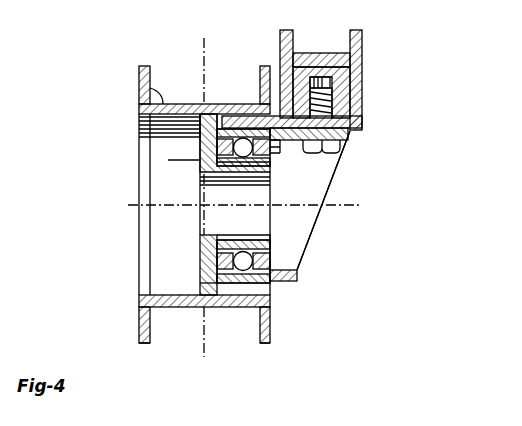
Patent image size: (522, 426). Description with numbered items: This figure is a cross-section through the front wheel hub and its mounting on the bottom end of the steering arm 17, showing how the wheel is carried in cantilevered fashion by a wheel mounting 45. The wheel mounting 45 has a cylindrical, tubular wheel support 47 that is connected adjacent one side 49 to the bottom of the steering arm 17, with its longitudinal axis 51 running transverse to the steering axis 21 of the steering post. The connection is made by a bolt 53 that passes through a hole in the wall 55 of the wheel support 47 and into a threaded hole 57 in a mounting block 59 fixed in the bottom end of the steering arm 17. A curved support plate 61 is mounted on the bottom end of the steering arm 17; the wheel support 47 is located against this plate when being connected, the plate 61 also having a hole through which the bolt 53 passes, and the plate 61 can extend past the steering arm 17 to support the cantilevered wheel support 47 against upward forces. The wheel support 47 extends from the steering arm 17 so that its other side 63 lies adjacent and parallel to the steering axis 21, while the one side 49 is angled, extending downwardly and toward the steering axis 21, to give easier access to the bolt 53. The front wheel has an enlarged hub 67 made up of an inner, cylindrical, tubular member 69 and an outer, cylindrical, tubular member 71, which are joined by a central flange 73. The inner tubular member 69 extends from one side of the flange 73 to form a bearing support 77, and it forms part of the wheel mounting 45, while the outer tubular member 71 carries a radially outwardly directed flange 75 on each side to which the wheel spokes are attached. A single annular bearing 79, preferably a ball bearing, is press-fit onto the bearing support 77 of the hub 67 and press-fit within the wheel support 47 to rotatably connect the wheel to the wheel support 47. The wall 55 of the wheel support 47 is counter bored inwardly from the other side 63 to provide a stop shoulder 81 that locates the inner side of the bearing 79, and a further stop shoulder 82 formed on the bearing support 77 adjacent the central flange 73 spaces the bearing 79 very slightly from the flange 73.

The steering arm 17 is at (356, 31).
The steering axis 21 is at (203, 60).
The wheel mounting 45 is at (354, 246).
The wheel support 47 is at (311, 252).
The one side 49 is at (314, 229).
The longitudinal axis 51 is at (130, 205).
The bolt 53 is at (337, 153).
The wall 55 is at (299, 280).
The threaded hole 57 is at (333, 93).
The mounting block 59 is at (295, 44).
The support plate 61 is at (362, 124).
The other side 63 is at (217, 280).
The hub 67 is at (138, 252).
The inner tubular member 69 is at (228, 232).
The outer tubular member 71 is at (150, 88).
The central flange 73 is at (139, 130).
The flange 75 is at (139, 332).
The bearing support 77 is at (200, 187).
The bearing 79 is at (274, 261).
The stop shoulder 81 is at (273, 194).
The stop shoulder 82 is at (216, 256).